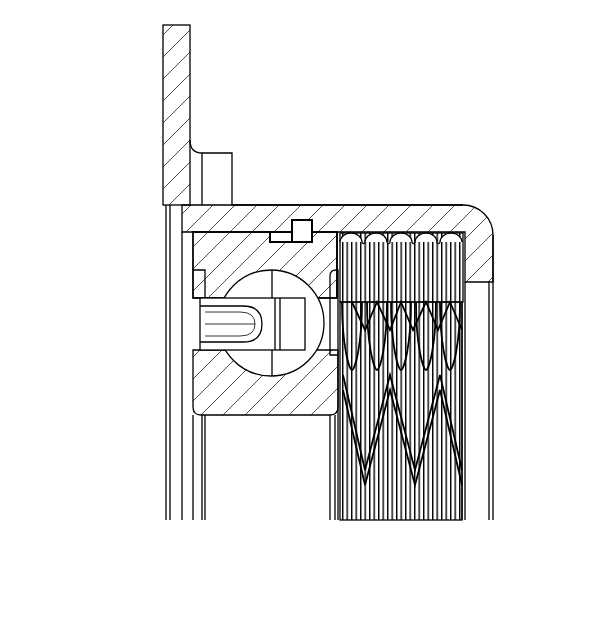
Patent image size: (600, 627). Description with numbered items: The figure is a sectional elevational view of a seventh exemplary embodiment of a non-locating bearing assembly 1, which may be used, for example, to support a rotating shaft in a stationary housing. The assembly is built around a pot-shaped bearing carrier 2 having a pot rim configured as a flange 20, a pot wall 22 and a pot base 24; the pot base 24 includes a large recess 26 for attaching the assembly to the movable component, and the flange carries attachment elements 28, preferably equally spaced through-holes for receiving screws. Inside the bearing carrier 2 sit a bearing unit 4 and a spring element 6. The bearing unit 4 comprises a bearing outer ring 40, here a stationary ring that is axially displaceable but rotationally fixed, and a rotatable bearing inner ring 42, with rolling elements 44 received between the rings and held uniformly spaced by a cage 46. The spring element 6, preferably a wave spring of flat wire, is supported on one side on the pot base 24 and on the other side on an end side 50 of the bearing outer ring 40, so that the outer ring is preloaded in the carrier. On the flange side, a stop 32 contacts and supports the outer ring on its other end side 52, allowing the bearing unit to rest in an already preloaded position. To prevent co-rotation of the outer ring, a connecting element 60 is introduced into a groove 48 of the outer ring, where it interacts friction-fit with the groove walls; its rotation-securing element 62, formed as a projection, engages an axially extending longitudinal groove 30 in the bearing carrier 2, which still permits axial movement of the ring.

The non-locating bearing assembly 1 is at (310, 59).
The bearing carrier 2 is at (130, 81).
The bearing unit 4 is at (160, 400).
The spring element 6 is at (447, 480).
The flange 20 is at (176, 52).
The pot wall 22 is at (335, 218).
The pot base 24 is at (485, 264).
The recess 26 is at (486, 390).
The attachment elements 28 is at (218, 173).
The groove 30 is at (208, 243).
The stop 32 is at (190, 240).
The bearing outer ring 40 is at (325, 240).
The bearing inner ring 42 is at (236, 400).
The rolling elements 44 is at (292, 355).
The cage 46 is at (215, 344).
The groove 48 is at (276, 206).
The end side 50 is at (340, 272).
The end side 52 is at (195, 262).
The connecting element 60 is at (302, 222).
The rotation-securing element 62 is at (325, 257).